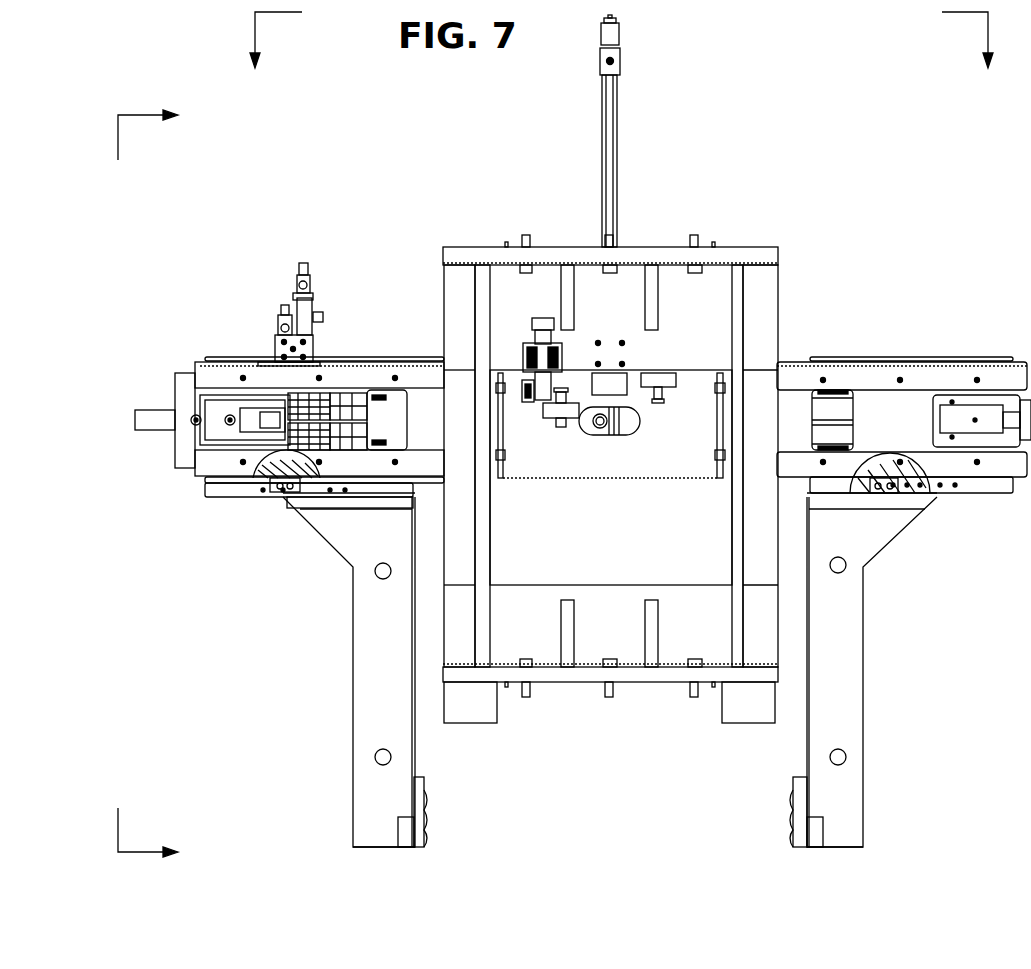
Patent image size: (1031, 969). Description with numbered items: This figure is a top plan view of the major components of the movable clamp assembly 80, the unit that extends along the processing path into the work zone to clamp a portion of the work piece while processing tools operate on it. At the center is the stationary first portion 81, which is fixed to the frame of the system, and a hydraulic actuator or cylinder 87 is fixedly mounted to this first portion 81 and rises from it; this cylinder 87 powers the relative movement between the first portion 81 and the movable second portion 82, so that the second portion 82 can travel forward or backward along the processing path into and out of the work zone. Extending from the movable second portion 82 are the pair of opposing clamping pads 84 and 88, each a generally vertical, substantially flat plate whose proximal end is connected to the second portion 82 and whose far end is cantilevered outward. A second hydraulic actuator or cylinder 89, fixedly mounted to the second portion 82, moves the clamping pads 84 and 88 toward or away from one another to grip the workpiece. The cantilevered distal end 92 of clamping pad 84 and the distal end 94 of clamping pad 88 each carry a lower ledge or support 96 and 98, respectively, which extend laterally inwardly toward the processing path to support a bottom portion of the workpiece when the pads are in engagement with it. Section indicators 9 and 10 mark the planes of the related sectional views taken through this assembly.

The movable clamp assembly 80 is at (574, 457).
The stationary first portion 81 is at (792, 255).
The movable second portion 82 is at (904, 380).
The clamping pad 84 is at (843, 647).
The hydraulic actuator or cylinder 87 is at (610, 89).
The clamping pad 88 is at (370, 668).
The hydraulic actuator or cylinder 89 is at (157, 410).
The distal end 92 is at (838, 849).
The distal end 94 is at (368, 850).
The lower ledge or support 96 is at (797, 826).
The lower ledge or support 98 is at (415, 805).
The section line 9 is at (620, 58).
The section line 10 is at (165, 489).